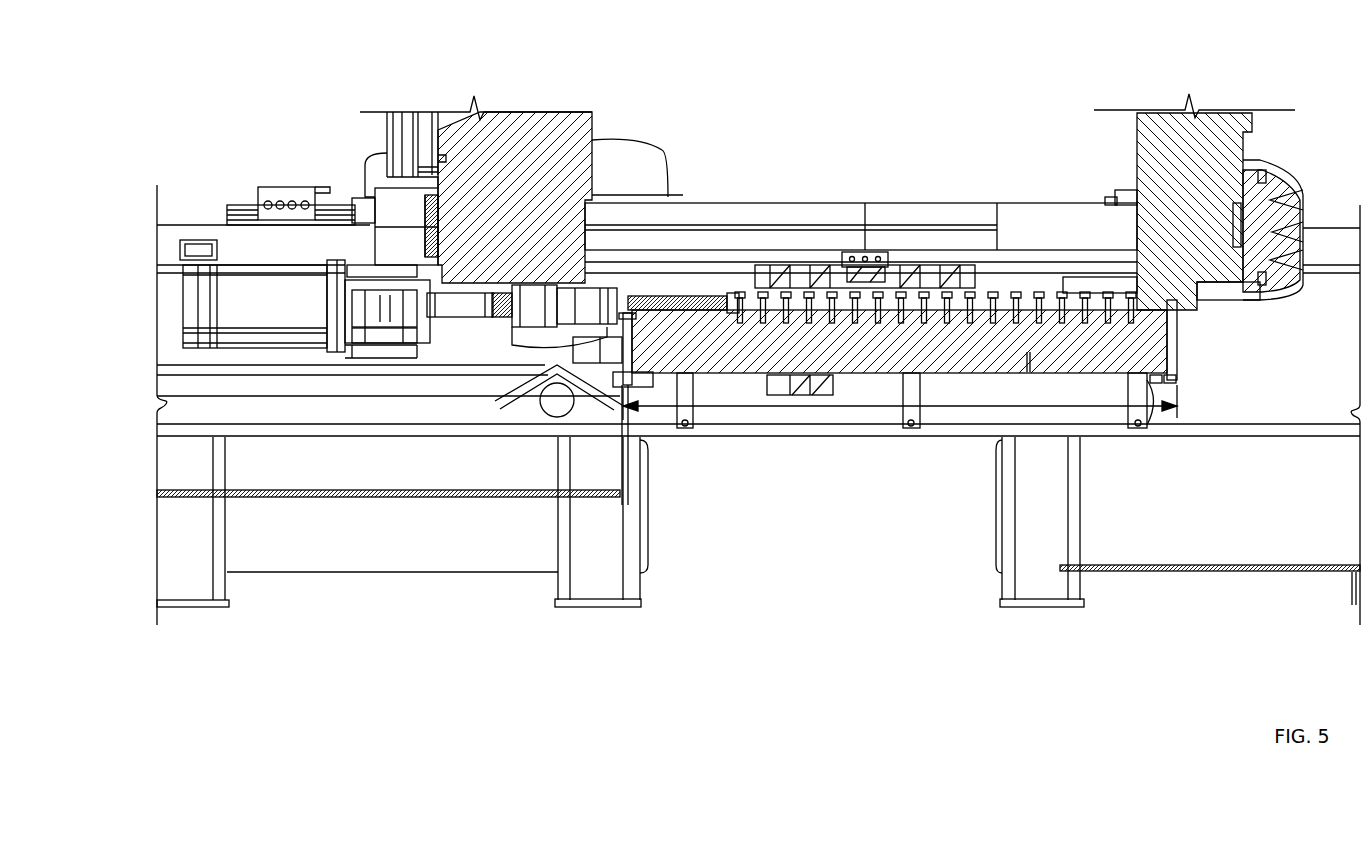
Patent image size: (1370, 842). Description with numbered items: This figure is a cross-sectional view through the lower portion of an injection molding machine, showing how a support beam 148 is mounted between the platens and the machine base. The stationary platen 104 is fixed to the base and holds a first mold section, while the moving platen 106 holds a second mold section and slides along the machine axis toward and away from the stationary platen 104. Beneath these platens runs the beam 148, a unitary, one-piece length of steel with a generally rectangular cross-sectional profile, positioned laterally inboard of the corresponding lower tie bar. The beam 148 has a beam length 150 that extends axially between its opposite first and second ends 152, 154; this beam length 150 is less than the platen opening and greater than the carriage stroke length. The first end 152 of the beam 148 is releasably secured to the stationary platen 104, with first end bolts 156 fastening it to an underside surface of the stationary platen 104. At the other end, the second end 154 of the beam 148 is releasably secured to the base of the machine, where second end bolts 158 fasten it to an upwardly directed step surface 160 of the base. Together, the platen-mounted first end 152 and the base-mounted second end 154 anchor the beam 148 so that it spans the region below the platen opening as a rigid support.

The stationary platen 104 is at (1170, 140).
The moving platen 106 is at (598, 152).
The beam 148 is at (675, 305).
The beam length 150 is at (862, 407).
The first end 152 is at (1177, 332).
The second end 154 is at (612, 334).
The first end bolts 156 is at (1177, 381).
The second end bolts 158 is at (627, 312).
The step surface 160 is at (655, 378).